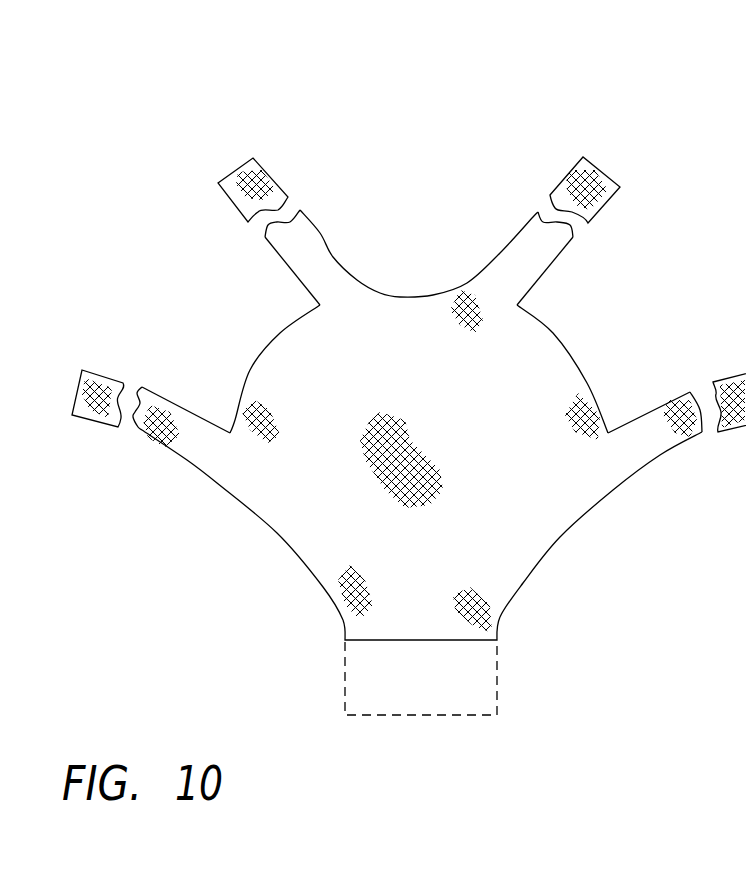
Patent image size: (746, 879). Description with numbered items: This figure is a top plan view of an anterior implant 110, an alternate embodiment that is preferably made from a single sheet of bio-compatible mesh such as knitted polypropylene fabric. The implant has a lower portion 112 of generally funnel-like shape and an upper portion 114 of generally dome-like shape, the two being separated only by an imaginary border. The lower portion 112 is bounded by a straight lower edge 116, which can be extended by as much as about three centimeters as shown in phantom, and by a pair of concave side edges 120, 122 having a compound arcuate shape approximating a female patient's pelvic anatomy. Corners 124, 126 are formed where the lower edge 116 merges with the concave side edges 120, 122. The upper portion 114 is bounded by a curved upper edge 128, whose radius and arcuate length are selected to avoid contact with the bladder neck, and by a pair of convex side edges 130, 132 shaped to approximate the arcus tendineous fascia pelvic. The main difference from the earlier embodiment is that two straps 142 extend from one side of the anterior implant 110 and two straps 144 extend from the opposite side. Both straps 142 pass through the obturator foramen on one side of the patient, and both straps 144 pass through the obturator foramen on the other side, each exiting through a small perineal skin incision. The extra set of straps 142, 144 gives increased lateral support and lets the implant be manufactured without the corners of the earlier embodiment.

The anterior implant 110 is at (323, 133).
The lower portion 112 is at (444, 552).
The upper portion 114 is at (456, 368).
The lower edge 116 is at (398, 642).
The concave side edge 120 is at (277, 533).
The concave side edge 122 is at (560, 537).
The corner 124 is at (347, 642).
The corner 126 is at (500, 640).
The curved upper edge 128 is at (413, 297).
The convex side edge 130 is at (250, 370).
The convex side edge 132 is at (548, 320).
The straps 142 is at (285, 267).
The straps 144 is at (657, 402).